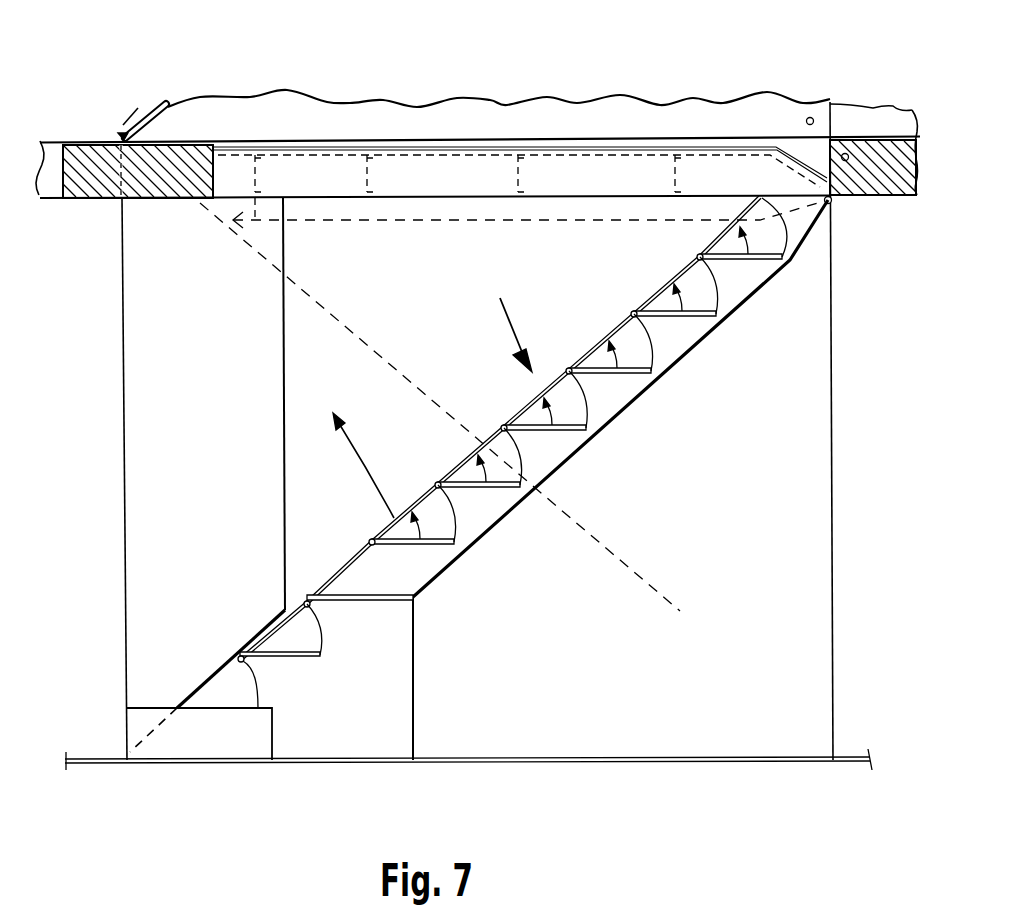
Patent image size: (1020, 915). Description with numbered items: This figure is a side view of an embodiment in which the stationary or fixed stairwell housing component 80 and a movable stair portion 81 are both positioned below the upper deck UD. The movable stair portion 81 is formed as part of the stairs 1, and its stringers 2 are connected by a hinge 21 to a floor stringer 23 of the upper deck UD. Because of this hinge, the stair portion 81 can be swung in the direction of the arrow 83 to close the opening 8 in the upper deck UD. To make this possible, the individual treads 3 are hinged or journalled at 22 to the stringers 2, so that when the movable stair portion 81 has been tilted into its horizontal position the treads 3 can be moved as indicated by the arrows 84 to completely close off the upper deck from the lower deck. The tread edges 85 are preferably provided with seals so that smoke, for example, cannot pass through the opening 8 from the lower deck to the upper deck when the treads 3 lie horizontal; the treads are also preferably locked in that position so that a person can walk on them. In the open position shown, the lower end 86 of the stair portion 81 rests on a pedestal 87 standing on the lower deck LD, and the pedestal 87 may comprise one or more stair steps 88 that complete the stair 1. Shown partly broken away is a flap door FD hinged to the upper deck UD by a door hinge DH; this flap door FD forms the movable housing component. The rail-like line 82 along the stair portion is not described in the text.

The stairs 1 is at (479, 474).
The stringers 2 is at (505, 518).
The treads 3 is at (670, 320).
The opening 8 is at (318, 148).
The hinge 21 is at (832, 205).
The hinge (tread journal) 22 is at (437, 482).
The floor stringer 23 is at (868, 146).
The stationary stairwell housing component 80 is at (148, 352).
The movable stair portion 81 is at (503, 322).
The upper stringer rail 82 is at (522, 412).
The arrow 83 is at (358, 461).
The arrows 84 is at (556, 413).
The tread edges 85 is at (523, 487).
The lower end 86 is at (418, 604).
The pedestal 87 is at (398, 716).
The stair steps 88 is at (345, 603).
The flap door FD is at (155, 108).
The door hinge DH is at (123, 133).
The upper deck UD is at (890, 193).
The lower deck LD is at (846, 756).